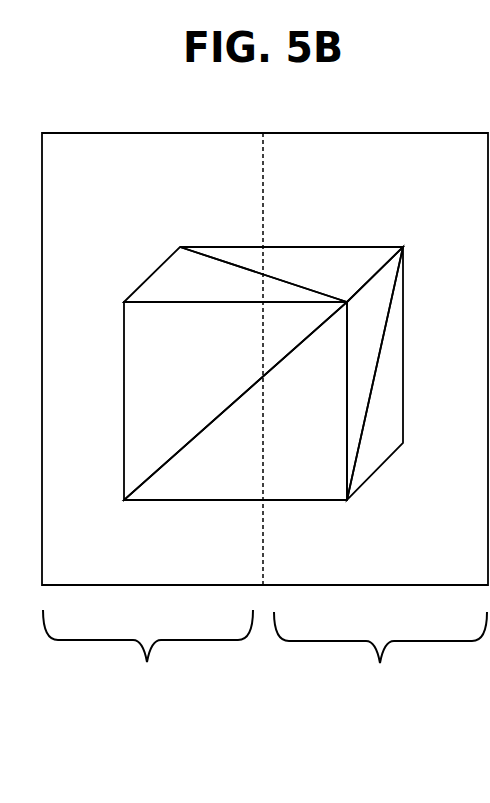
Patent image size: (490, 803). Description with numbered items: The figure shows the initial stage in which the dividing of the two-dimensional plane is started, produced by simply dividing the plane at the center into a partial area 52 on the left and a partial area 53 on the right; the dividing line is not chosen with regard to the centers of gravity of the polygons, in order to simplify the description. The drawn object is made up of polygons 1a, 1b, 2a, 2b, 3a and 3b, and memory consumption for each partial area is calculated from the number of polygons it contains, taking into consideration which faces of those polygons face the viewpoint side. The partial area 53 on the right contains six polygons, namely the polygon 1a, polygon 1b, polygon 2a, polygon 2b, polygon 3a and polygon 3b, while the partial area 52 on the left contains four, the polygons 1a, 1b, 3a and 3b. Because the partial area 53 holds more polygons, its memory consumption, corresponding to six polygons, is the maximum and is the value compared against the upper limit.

The polygon 1a is at (235, 401).
The polygon 1b is at (235, 401).
The polygon 2a is at (375, 373).
The polygon 2b is at (375, 373).
The polygon 3a is at (235, 274).
The polygon 3b is at (291, 274).
The partial area 52 is at (152, 423).
The partial area 53 is at (375, 423).